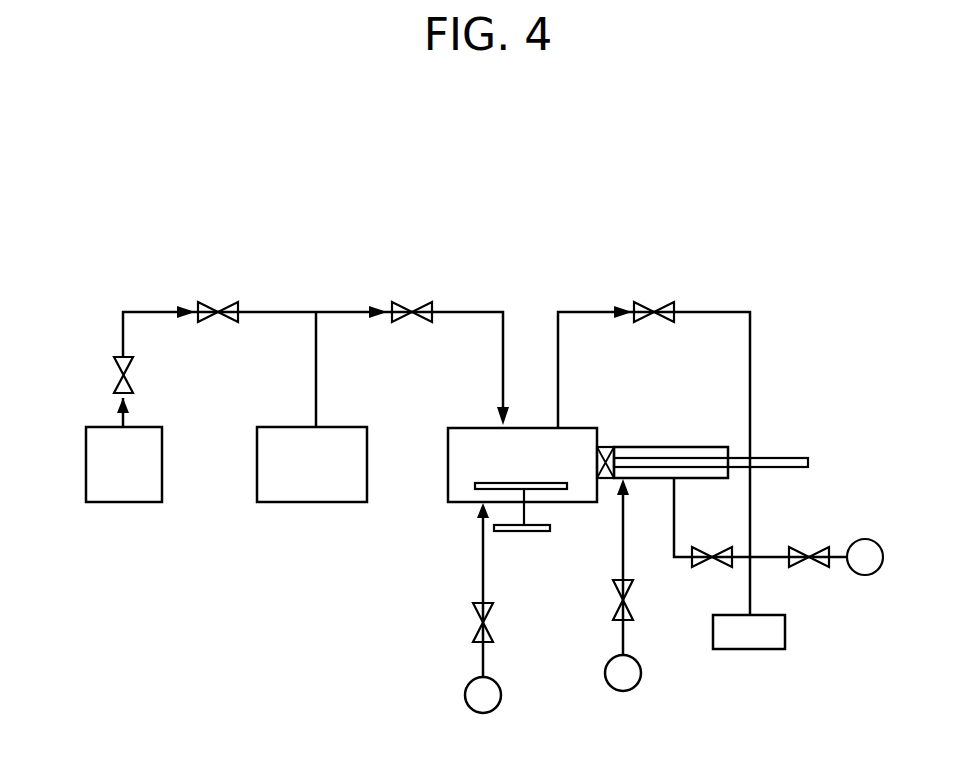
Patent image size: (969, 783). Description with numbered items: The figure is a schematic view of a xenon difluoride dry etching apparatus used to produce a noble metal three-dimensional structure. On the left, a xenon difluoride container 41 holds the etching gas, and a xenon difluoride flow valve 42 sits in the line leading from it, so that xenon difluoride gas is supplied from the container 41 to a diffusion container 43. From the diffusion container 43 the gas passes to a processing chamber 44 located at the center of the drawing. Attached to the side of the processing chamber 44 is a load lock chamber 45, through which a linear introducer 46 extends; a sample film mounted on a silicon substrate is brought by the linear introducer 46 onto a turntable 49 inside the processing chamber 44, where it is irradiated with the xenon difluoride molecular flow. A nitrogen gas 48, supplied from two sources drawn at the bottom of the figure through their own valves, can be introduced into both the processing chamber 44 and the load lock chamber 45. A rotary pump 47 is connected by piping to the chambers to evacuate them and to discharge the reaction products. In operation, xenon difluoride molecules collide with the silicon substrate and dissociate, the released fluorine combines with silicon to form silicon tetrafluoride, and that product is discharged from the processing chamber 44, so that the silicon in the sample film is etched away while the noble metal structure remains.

The xenon difluoride container 41 is at (103, 502).
The xenon difluoride flow valve 42 is at (114, 376).
The diffusion container 43 is at (287, 502).
The processing chamber 44 is at (513, 428).
The load lock chamber 45 is at (697, 443).
The linear introducer 46 is at (790, 455).
The rotary pump 47 is at (752, 650).
The nitrogen gas 48 is at (483, 713).
The turntable 49 is at (478, 490).